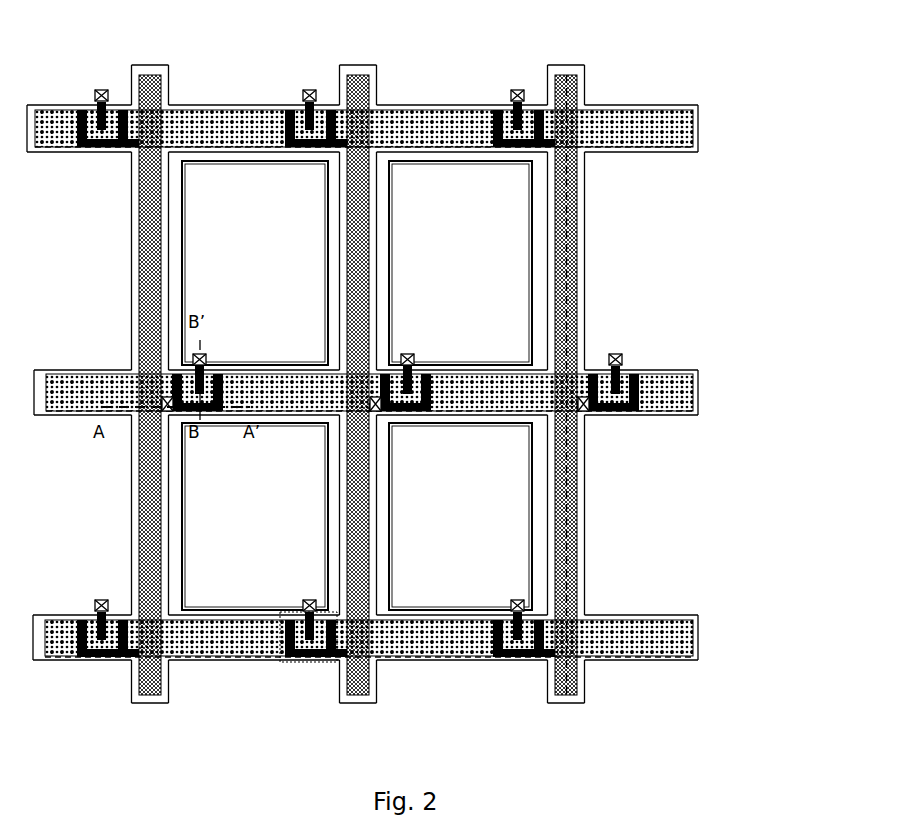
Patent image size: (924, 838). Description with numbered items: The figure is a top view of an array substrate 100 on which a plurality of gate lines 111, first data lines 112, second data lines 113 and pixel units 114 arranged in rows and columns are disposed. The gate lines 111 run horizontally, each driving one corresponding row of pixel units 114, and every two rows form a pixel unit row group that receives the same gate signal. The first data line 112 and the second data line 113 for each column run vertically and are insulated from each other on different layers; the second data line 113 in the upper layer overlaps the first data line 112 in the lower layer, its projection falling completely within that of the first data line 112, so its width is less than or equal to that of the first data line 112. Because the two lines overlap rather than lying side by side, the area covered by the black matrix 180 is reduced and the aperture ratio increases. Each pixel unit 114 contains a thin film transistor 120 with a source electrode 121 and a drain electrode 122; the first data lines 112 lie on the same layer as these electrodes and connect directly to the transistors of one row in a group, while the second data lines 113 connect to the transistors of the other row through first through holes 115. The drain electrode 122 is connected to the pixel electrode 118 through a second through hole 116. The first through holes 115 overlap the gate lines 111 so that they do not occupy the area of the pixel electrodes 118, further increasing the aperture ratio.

The array substrate 100 is at (64, 44).
The gate line 111 is at (665, 640).
The first data line 112 is at (555, 85).
The second data line 113 is at (565, 676).
The pixel unit 114 is at (575, 242).
The first through hole 115 is at (165, 399).
The second through hole 116 is at (193, 355).
The pixel electrode 118 is at (243, 496).
The thin film transistor 120 is at (308, 662).
The source electrode 121 is at (300, 655).
The drain electrode 122 is at (290, 614).
The black matrix 180 is at (565, 70).